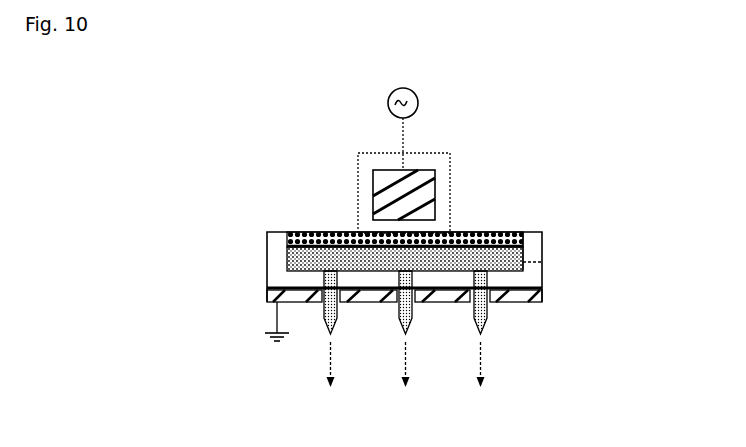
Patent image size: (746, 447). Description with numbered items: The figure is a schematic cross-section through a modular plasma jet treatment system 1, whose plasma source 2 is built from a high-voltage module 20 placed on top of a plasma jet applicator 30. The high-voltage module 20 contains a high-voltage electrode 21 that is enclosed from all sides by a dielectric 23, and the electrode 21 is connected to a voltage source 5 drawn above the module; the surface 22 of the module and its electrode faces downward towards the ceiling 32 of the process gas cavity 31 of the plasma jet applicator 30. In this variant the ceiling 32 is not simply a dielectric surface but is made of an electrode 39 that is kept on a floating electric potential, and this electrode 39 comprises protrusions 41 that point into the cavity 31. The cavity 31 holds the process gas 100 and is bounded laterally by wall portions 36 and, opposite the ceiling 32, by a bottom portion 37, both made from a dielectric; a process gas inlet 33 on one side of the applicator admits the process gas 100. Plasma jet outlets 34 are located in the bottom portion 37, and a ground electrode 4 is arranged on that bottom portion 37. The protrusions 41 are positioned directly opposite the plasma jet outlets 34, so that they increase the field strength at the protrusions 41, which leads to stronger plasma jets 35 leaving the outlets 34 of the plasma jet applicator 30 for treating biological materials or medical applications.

The system 1 is at (400, 245).
The plasma source 2 is at (600, 136).
The ground electrode 4 is at (293, 293).
The AC voltage source 5 is at (418, 100).
The high-voltage module 20 is at (460, 136).
The high-voltage electrode 21 is at (381, 175).
The surface of the high-voltage module 22 is at (383, 224).
The dielectric 23 is at (368, 175).
The plasma jet applicator 30 is at (265, 247).
The process gas cavity 31 is at (458, 263).
The ceiling 32 is at (341, 180).
The process gas inlet 33 is at (528, 259).
The plasma jet outlet 34 is at (478, 282).
The plasma jet 35 is at (482, 308).
The wall portion 36 is at (282, 258).
The bottom portion 37 is at (497, 280).
The electrode kept on a floating electric potential 39 is at (293, 240).
The protrusion 41 is at (330, 242).
The process gas 100 is at (556, 263).